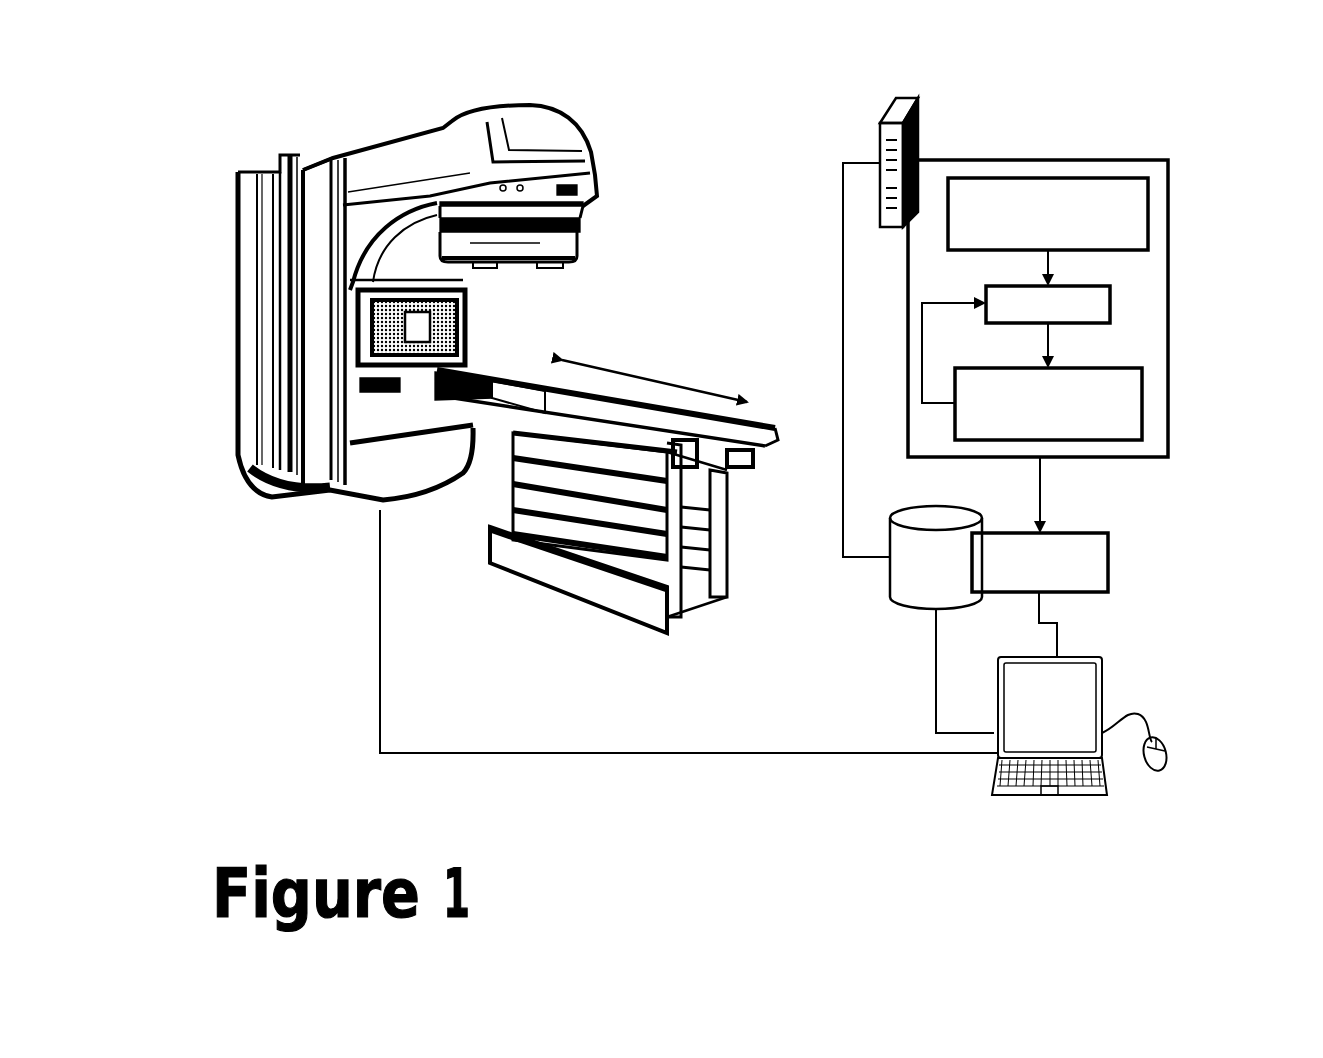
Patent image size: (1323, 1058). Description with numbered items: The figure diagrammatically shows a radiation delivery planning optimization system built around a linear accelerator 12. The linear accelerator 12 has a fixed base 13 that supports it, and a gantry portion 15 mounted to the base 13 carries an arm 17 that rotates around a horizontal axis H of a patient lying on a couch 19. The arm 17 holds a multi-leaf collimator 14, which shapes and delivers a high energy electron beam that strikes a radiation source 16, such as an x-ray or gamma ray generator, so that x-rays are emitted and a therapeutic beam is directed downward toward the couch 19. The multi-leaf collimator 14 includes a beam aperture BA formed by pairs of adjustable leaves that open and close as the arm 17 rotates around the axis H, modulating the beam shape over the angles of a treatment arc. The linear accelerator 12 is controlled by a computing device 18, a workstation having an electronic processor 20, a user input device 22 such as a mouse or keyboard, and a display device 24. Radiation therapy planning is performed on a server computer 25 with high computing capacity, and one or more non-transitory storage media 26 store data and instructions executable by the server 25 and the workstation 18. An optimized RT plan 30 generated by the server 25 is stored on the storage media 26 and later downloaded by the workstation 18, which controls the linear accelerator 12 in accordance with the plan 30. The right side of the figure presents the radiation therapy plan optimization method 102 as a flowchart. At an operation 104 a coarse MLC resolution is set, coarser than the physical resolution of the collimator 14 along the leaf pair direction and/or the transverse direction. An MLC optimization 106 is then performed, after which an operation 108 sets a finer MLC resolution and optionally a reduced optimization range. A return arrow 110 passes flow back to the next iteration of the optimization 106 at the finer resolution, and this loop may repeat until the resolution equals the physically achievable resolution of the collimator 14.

The linear accelerator 12 is at (360, 107).
The fixed base 13 is at (248, 275).
The multi-leaf collimator 14 is at (580, 217).
The gantry portion 15 is at (305, 370).
The radiation source 16 is at (465, 325).
The arm 17 is at (452, 122).
The computing device 18 is at (1145, 668).
The couch 19 is at (735, 433).
The electronic processor 20 is at (1005, 772).
The user input device 22 is at (1163, 771).
The display device 24 is at (1034, 722).
The server computer 25 is at (910, 132).
The non-transitory storage media 26 is at (920, 585).
The optimized RT plan 30 is at (1120, 557).
The radiation therapy plan optimization method 102 is at (1185, 166).
The coarse resolution setting operation 104 is at (1148, 212).
The MLC optimization 106 is at (1110, 304).
The finer resolution setting operation 108 is at (1140, 400).
The return arrow 110 is at (928, 360).
The beam aperture BA is at (540, 268).
The horizontal axis H is at (677, 382).